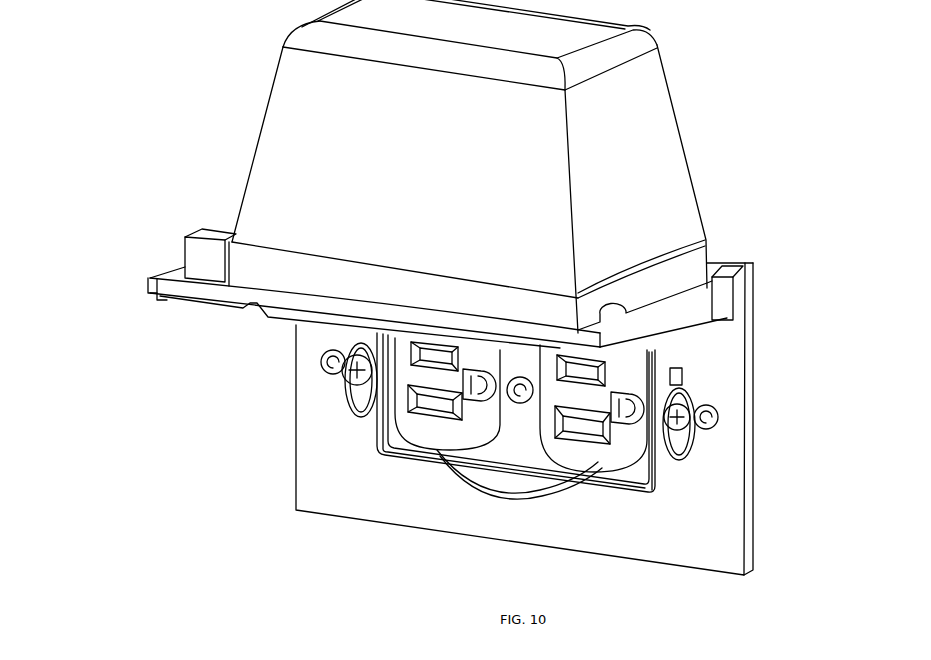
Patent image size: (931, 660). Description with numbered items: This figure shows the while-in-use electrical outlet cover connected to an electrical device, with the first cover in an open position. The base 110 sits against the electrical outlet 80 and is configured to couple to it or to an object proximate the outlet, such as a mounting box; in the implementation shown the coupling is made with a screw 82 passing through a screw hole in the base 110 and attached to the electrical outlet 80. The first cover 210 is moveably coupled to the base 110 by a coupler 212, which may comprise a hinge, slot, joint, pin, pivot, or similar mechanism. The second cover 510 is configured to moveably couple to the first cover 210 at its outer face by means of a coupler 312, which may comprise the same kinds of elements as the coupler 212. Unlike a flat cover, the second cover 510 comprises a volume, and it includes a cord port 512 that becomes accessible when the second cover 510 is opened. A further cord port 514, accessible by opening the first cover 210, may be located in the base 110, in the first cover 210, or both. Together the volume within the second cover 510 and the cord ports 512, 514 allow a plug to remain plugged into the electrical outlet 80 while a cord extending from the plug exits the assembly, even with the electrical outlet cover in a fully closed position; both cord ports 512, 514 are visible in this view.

The second cover 510 is at (332, 155).
The cord port 512 is at (607, 313).
The cord port 514 is at (257, 307).
The first cover 210 is at (703, 306).
The coupler 212 is at (727, 275).
The coupler 312 is at (208, 257).
The base 110 is at (738, 385).
The electrical outlet 80 is at (468, 432).
The screw 82 is at (363, 373).